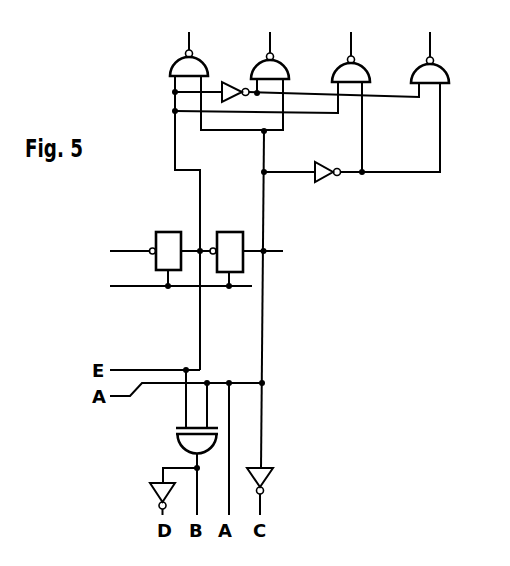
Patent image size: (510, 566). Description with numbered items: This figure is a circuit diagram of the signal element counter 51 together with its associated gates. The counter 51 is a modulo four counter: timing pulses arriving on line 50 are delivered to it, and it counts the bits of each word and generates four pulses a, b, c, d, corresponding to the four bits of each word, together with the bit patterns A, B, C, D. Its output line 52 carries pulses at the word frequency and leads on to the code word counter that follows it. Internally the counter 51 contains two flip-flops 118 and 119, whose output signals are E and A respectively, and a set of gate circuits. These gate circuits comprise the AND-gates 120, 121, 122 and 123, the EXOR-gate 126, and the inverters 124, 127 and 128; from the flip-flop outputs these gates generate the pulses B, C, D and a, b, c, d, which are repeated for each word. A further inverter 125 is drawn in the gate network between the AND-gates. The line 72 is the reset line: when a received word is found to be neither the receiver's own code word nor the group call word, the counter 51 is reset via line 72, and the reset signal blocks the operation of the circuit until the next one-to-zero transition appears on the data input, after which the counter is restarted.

The AND-gate 120 is at (199, 59).
The AND-gate 121 is at (287, 62).
The AND-gate 122 is at (368, 63).
The AND-gate 123 is at (448, 65).
The inverter 124 is at (233, 98).
The inverter 125 is at (333, 178).
The flip-flop 118 is at (169, 232).
The flip-flop 119 is at (229, 232).
The line 50 is at (117, 251).
The output line 52 is at (245, 251).
The line 72 is at (168, 285).
The modulo 4 counter 51 is at (361, 336).
The EXOR-gate 126 is at (175, 435).
The inverter 127 is at (153, 492).
The inverter 128 is at (273, 473).